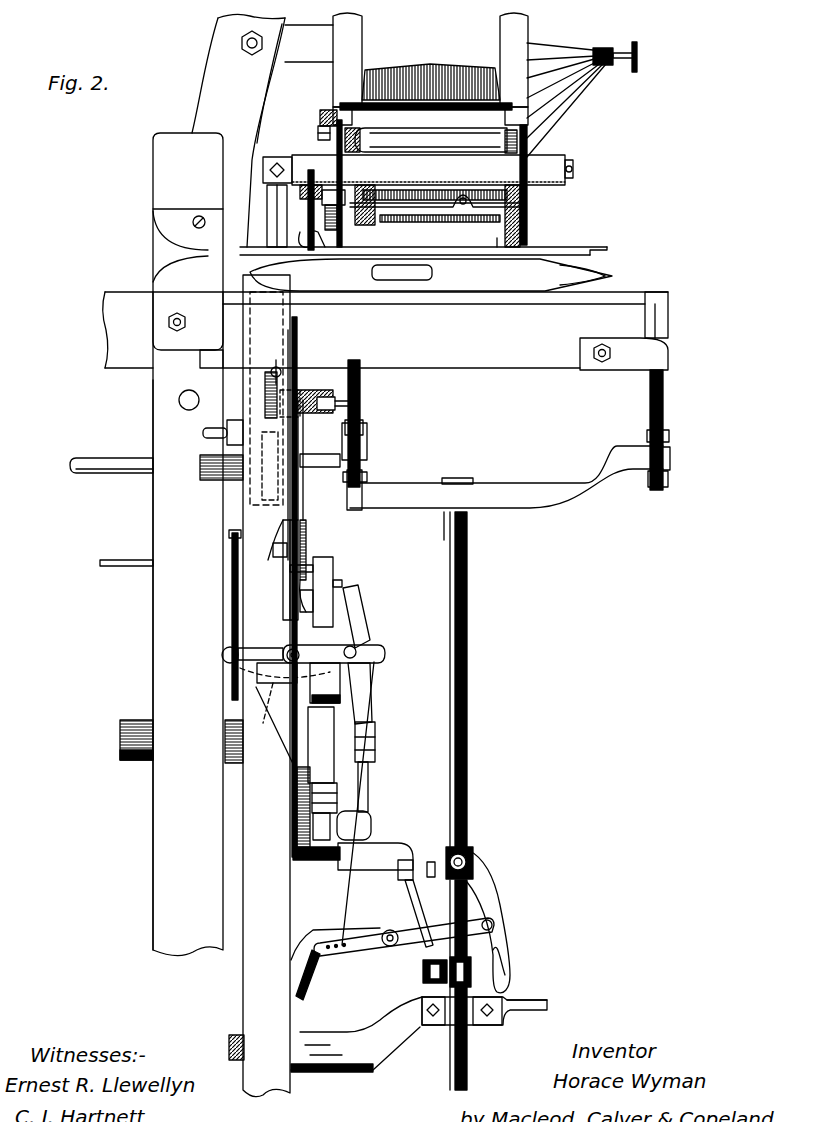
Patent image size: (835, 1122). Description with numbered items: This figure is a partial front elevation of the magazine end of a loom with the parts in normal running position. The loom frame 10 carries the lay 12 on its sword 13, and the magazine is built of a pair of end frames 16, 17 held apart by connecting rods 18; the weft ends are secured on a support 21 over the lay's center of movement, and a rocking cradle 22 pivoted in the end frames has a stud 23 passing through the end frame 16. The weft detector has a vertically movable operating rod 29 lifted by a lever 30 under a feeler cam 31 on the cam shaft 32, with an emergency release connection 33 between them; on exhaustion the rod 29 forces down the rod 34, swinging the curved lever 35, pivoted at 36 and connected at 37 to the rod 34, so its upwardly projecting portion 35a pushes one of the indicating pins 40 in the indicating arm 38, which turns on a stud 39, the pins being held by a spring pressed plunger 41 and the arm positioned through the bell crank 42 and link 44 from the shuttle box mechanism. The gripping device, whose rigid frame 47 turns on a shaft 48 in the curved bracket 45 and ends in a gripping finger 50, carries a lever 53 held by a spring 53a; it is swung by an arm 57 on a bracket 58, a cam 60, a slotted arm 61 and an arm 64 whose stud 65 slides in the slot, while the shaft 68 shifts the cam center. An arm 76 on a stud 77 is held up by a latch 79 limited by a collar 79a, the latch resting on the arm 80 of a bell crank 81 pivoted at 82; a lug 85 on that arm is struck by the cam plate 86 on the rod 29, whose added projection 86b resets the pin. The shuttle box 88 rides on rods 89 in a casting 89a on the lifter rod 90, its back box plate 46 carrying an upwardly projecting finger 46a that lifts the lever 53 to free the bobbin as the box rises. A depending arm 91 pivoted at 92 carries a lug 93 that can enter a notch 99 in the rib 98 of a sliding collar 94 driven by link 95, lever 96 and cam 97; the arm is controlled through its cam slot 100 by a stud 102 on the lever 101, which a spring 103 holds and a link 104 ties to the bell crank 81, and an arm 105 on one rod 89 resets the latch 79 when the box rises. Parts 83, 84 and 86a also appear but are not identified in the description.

The loom frame 10 is at (254, 946).
The lay 12 is at (471, 364).
The sword 13 is at (153, 614).
The end frame 16 is at (351, 58).
The end frame 17 is at (507, 52).
The connecting rods 18 is at (332, 112).
The support 21 is at (618, 66).
The rocking gate or cradle 22 is at (481, 146).
The stud 23 is at (321, 128).
The operating rod 29 is at (296, 333).
The lever 30 is at (313, 860).
The feeler cam 31 is at (334, 780).
The cam shaft 32 is at (140, 763).
The emergency release connection 33 is at (299, 801).
The rod 34 is at (232, 538).
The curved lever 35 is at (287, 674).
The upwardly projecting portion 35a is at (364, 600).
The pivot 36 is at (361, 644).
The pivotal connection 37 is at (230, 654).
The indicating arm 38 is at (338, 557).
The stud 39 is at (338, 690).
The indicating pins 40 is at (308, 607).
The spring pressed plunger 41 is at (318, 567).
The bell crank 42 is at (300, 567).
The link 44 is at (120, 566).
The curved bracket 45 is at (275, 188).
The back binder 46 is at (556, 250).
The upwardly projecting finger 46a is at (352, 242).
The rigid frame 47 is at (422, 227).
The shaft 48 is at (572, 168).
The gripping finger 50 is at (506, 210).
The lever 53 is at (433, 212).
The spring 53a is at (497, 255).
The arm 57 is at (232, 421).
The bracket 58 is at (153, 399).
The cam 60 is at (251, 487).
The slotted arm 61 is at (311, 185).
The arm 64 is at (333, 200).
The stud 65 is at (302, 193).
The shaft 68 is at (115, 471).
The arm 76 is at (300, 400).
The stud 77 is at (353, 408).
The latch 79 is at (326, 381).
The collar 79a is at (338, 396).
The upwardly projecting arm 80 is at (285, 568).
The bell crank 81 is at (371, 650).
The pivot 82 is at (263, 668).
The rod 83 is at (274, 377).
The hook 84 is at (325, 236).
The lug 85 is at (273, 548).
The cam plate 86 is at (294, 543).
The arm 86a is at (287, 591).
The cam projection 86b is at (368, 597).
The shuttle box 88 is at (620, 292).
The rods 89 is at (360, 374).
The casting 89a is at (520, 506).
The lifter rod 90 is at (466, 636).
The depending arm 91 is at (479, 890).
The pivot 92 is at (476, 862).
The lug 93 is at (508, 993).
The collar 94 is at (448, 987).
The link 95 is at (414, 905).
The lever 96 is at (381, 861).
The cam 97 is at (343, 733).
The rib 98 is at (455, 1030).
The notch 99 is at (428, 969).
The cam slot 100 is at (496, 945).
The lever 101 is at (369, 948).
The stud 102 is at (492, 923).
The spring 103 is at (306, 990).
The link 104 is at (366, 792).
The arm 105 is at (306, 458).